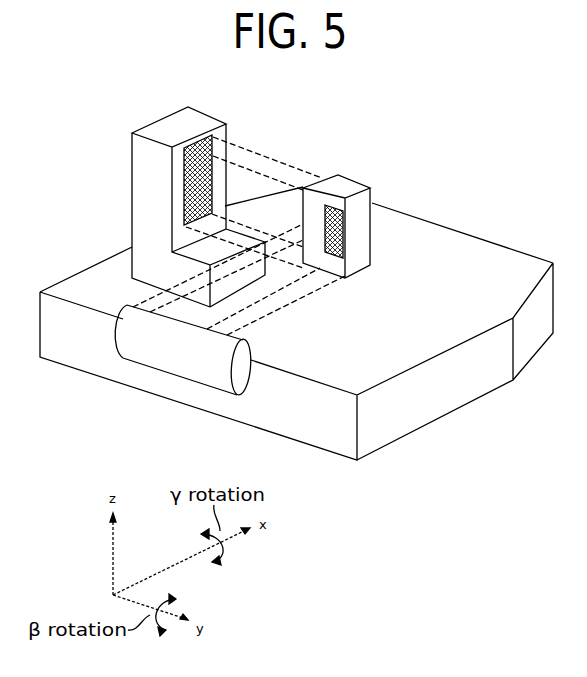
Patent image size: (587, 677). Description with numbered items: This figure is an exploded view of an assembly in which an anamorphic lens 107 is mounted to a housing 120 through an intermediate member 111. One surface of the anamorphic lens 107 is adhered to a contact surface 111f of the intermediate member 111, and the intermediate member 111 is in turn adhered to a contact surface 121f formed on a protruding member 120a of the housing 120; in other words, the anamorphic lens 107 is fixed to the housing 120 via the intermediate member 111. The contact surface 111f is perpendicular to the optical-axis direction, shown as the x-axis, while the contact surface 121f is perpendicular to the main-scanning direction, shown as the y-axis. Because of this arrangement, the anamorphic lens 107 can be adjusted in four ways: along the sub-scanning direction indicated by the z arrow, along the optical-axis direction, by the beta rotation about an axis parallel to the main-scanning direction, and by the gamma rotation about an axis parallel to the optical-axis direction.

The housing 120 is at (498, 244).
The protruding member 120a is at (132, 206).
The contact surface 121f is at (218, 138).
The intermediate member 111 is at (356, 184).
The contact surface 111f is at (326, 236).
The anamorphic lens 107 is at (147, 370).